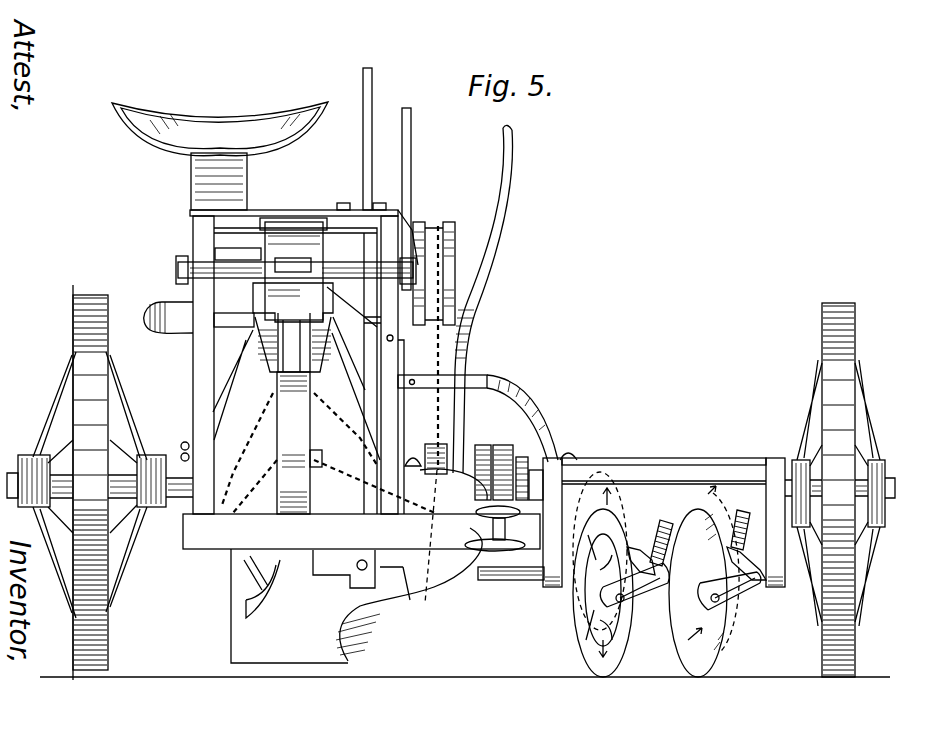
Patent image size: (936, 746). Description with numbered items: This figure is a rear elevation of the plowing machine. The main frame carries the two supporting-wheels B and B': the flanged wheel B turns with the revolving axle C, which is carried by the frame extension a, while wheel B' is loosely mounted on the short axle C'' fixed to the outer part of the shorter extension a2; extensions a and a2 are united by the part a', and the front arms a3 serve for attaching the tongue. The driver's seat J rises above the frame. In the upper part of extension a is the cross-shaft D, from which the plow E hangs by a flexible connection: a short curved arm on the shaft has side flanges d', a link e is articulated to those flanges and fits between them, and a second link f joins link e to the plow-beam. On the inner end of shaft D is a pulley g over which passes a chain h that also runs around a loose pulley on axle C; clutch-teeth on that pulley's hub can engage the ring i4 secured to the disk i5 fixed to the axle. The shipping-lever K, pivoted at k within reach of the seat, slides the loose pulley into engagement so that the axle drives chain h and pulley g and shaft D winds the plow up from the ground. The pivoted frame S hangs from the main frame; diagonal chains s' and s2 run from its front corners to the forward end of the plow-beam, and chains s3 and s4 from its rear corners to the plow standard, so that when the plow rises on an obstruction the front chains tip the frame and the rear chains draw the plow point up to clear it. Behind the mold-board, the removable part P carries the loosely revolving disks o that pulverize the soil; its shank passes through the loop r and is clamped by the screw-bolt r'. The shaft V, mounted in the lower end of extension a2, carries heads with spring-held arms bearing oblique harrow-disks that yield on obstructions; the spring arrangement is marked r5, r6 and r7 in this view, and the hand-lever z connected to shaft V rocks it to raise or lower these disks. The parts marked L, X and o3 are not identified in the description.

The supporting-wheel B is at (92, 482).
The supporting-wheel B' is at (838, 490).
The revolving axle C is at (100, 459).
The short axle C'' is at (853, 487).
The seat J is at (220, 156).
The frame extension a is at (271, 358).
The frame connecting part a' is at (511, 588).
The shorter frame extension a2 is at (499, 458).
The front projecting arm a3 is at (353, 373).
The cross-shaft D is at (294, 270).
The side flange d' is at (283, 246).
The link e is at (293, 269).
The second link f is at (293, 327).
The diagonal chain s' is at (247, 449).
The diagonal chain s2 is at (345, 429).
The diagonal chain s3 is at (255, 497).
The diagonal chain s4 is at (374, 486).
The pivoted frame S is at (361, 531).
The plow E is at (303, 606).
The removable part P is at (411, 565).
The revolving disk o is at (495, 538).
The clutch ring i4 is at (483, 459).
The clutch disk i5 is at (503, 459).
The gear X is at (525, 465).
The pinion o3 is at (521, 485).
The hand-lever z is at (377, 139).
The lever L is at (412, 146).
The shipping-lever K is at (508, 188).
The pulley g is at (440, 346).
The pivot k is at (478, 378).
The chain h is at (410, 427).
The shaft V is at (572, 605).
The loop r is at (646, 581).
The screw-bolt r' is at (729, 595).
The spring r5 is at (746, 545).
The bracket r6 is at (645, 545).
The spring r7 is at (670, 524).